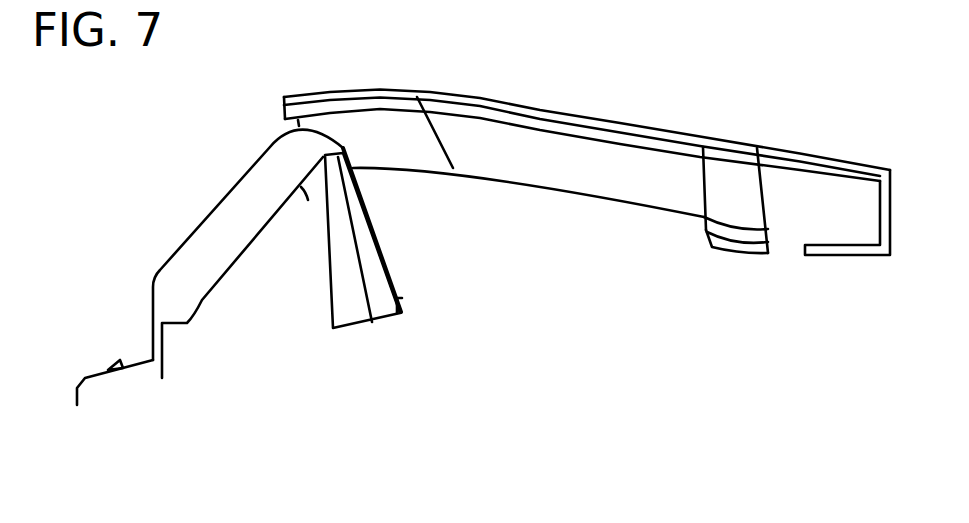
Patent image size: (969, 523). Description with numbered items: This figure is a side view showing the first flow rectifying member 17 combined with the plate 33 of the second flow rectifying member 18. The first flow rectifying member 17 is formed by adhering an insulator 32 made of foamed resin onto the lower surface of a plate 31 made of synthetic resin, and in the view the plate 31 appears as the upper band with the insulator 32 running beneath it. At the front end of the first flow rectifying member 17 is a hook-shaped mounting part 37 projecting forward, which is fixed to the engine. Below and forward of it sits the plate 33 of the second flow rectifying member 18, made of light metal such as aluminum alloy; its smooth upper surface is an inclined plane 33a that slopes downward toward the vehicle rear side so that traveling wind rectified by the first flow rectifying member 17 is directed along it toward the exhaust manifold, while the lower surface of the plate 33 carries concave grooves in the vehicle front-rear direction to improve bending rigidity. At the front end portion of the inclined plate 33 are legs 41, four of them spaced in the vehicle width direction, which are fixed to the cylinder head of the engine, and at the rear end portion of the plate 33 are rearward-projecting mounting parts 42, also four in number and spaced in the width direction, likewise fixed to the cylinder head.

The first flow rectifying member 17 is at (661, 126).
The second flow rectifying member 18 is at (262, 141).
The plate 31 is at (565, 113).
The insulator 32 is at (571, 177).
The plate 33 is at (240, 205).
The inclined plane 33a is at (195, 234).
The mounting part 37 is at (840, 257).
The leg 41 is at (378, 240).
The mounting part 42 is at (120, 378).